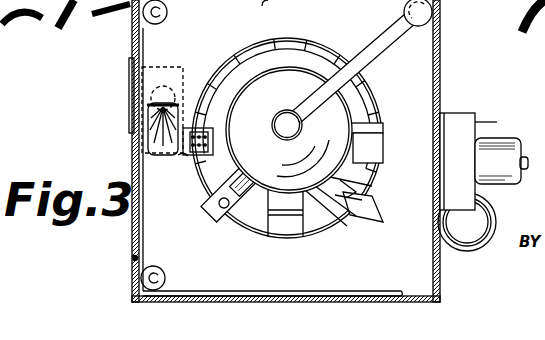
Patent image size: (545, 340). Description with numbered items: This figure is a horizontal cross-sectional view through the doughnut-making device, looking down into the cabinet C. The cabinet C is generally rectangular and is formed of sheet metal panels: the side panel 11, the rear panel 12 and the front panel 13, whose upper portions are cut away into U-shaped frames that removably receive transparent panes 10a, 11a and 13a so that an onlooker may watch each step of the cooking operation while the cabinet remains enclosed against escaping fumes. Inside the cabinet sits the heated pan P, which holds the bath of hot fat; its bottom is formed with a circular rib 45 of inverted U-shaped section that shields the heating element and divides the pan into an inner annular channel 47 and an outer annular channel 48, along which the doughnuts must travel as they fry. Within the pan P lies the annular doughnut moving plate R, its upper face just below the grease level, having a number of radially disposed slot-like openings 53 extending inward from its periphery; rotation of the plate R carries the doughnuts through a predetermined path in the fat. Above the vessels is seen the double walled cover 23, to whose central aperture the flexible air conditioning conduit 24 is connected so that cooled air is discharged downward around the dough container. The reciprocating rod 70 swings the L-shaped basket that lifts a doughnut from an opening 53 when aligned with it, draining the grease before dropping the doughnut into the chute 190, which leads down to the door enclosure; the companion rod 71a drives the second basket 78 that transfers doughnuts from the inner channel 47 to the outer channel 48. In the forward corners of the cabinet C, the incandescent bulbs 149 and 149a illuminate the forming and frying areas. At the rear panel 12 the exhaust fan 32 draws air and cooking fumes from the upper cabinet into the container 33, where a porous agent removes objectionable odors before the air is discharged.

The side panel 11 is at (411, 300).
The transparent pane 11a is at (308, 292).
The front panel 13 is at (135, 266).
The transparent pane 13a is at (143, 217).
The rear panel 12 is at (440, 89).
The cabinet C is at (441, 60).
The transparent pane 10a is at (280, 8).
The incandescent bulb 149 is at (168, 14).
The incandescent bulb 149a is at (164, 270).
The chute 190 is at (180, 102).
The rod 70 is at (183, 155).
The slot-like openings 53 is at (372, 113).
The heated pan P is at (281, 243).
The doughnut moving plate R is at (322, 232).
The inner annular channel 47 is at (372, 180).
The circular rib 45 is at (356, 192).
The outer annular channel 48 is at (362, 200).
The rod 71a is at (203, 215).
The double walled cover 23 is at (289, 130).
The second basket 78 is at (252, 171).
The flexible air conditioning conduit 24 is at (378, 66).
The container 33 is at (495, 208).
The exhaust fan 32 is at (492, 137).